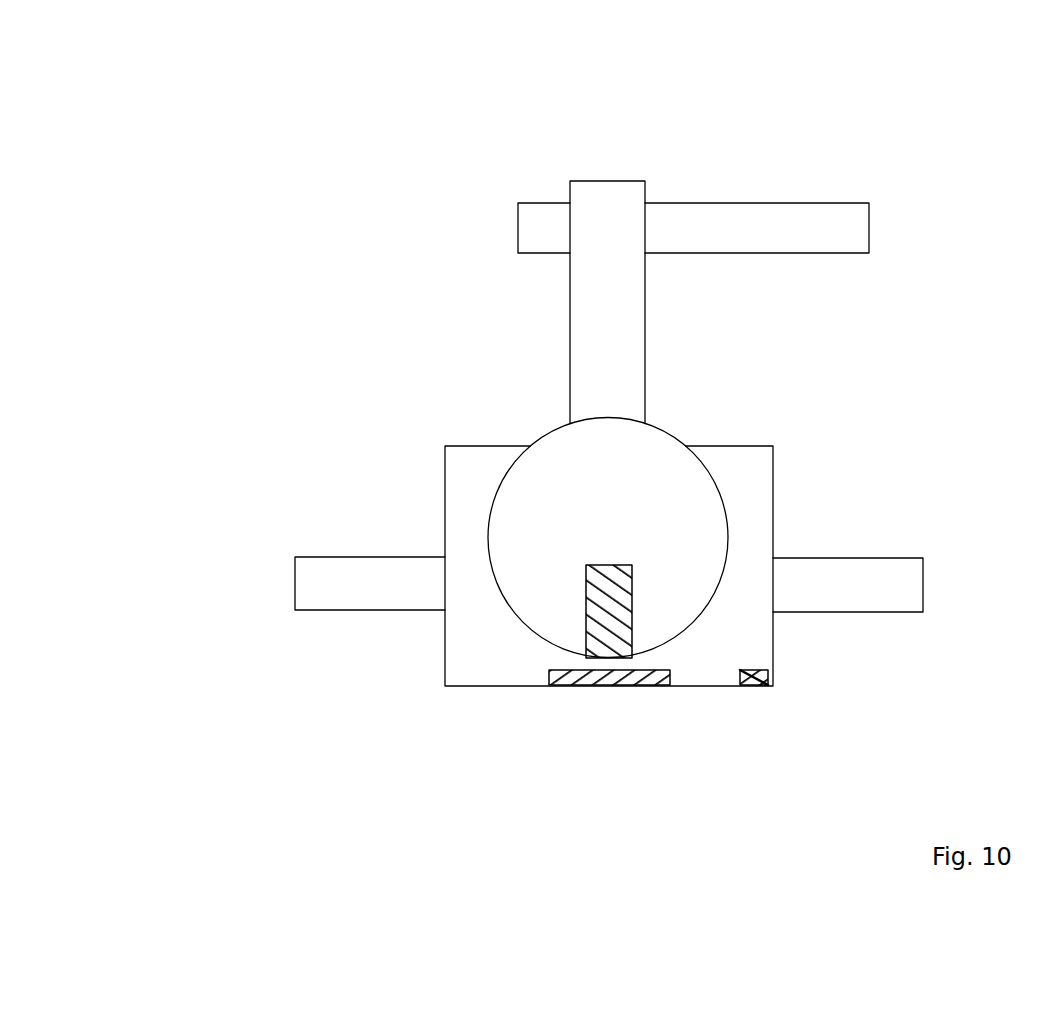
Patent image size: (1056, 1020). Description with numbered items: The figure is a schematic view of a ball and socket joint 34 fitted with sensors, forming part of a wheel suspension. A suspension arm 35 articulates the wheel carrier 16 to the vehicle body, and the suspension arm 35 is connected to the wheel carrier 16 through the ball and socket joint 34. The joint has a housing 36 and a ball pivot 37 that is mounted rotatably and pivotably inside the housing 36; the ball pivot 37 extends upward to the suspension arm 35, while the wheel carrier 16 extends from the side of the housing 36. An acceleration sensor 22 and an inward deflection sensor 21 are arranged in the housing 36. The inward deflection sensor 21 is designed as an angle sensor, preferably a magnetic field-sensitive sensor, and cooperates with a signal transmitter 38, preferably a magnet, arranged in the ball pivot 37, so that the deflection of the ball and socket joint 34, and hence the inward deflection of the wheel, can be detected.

The ball and socket joint 34 is at (250, 428).
The suspension arm 35 is at (785, 220).
The ball pivot 37 is at (618, 343).
The housing 36 is at (477, 645).
The signal transmitter 38 is at (585, 567).
The wheel carrier 16 is at (878, 573).
The inward deflection sensor 21 is at (585, 678).
The acceleration sensor 22 is at (757, 678).